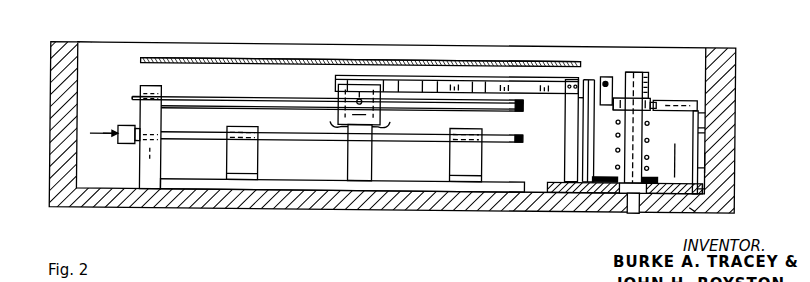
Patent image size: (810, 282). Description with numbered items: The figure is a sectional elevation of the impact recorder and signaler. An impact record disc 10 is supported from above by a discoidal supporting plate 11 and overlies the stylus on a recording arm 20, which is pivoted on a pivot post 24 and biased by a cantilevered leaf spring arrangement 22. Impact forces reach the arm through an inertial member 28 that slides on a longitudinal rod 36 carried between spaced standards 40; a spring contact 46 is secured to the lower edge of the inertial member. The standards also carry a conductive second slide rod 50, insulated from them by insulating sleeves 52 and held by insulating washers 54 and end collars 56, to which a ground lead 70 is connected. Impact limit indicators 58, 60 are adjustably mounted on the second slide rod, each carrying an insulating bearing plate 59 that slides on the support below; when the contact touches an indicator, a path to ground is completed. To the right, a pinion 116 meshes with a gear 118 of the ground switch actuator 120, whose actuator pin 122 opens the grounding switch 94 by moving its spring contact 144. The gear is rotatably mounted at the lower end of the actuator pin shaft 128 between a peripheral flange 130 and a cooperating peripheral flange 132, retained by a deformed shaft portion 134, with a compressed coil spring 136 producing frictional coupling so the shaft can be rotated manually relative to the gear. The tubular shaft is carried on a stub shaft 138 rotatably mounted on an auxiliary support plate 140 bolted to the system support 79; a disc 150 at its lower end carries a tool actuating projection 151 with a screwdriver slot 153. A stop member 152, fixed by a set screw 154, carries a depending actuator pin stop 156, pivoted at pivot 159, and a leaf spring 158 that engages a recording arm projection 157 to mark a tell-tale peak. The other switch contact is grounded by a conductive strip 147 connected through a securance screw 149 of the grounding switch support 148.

The impact record disc 10 is at (198, 67).
The discoidal supporting plate 11 is at (184, 59).
The recording arm 20 is at (456, 80).
The cantilevered leaf spring arrangement 22 is at (506, 80).
The pivot post 24 is at (565, 120).
The inertial member 28 is at (337, 92).
The longitudinal rod 36 is at (213, 98).
The standards 40 is at (142, 88).
The spring contact 46 is at (331, 125).
The second slide rod 50 is at (186, 134).
The insulating sleeves 52 is at (150, 152).
The insulating washers 54 is at (137, 113).
The end collars 56 is at (118, 127).
The impact limit indicator 58 is at (226, 156).
The bearing plate 59 is at (257, 178).
The impact limit indicator 60 is at (483, 158).
The ground lead 70 is at (103, 139).
The system support 79 is at (465, 199).
The grounding switch 94 is at (704, 93).
The pinion 116 is at (703, 168).
The gear 118 is at (598, 193).
The ground switch actuator 120 is at (623, 131).
The actuator pin 122 is at (652, 96).
The actuator pin shaft 128 is at (651, 150).
The peripheral flange 130 is at (637, 72).
The cooperating peripheral flange 132 is at (615, 168).
The deformed shaft portion 134 is at (698, 148).
The compressed coil spring 136 is at (700, 110).
The stub shaft 138 is at (630, 85).
The auxiliary support plate 140 is at (700, 188).
The grounding switch spring contact 144 is at (663, 108).
The conductive strip 147 is at (706, 129).
The grounding switch support 148 is at (770, 116).
The securance screw 149 is at (705, 187).
The disc 150 is at (608, 184).
The tool actuating projection 151 is at (627, 205).
The stop member 152 is at (625, 75).
The screwdriver slot 153 is at (640, 211).
The set screw 154 is at (662, 58).
The actuator pin stop 156 is at (584, 98).
The recording arm projection 157 is at (590, 78).
The leaf spring 158 is at (613, 90).
The pivot 159 is at (609, 77).